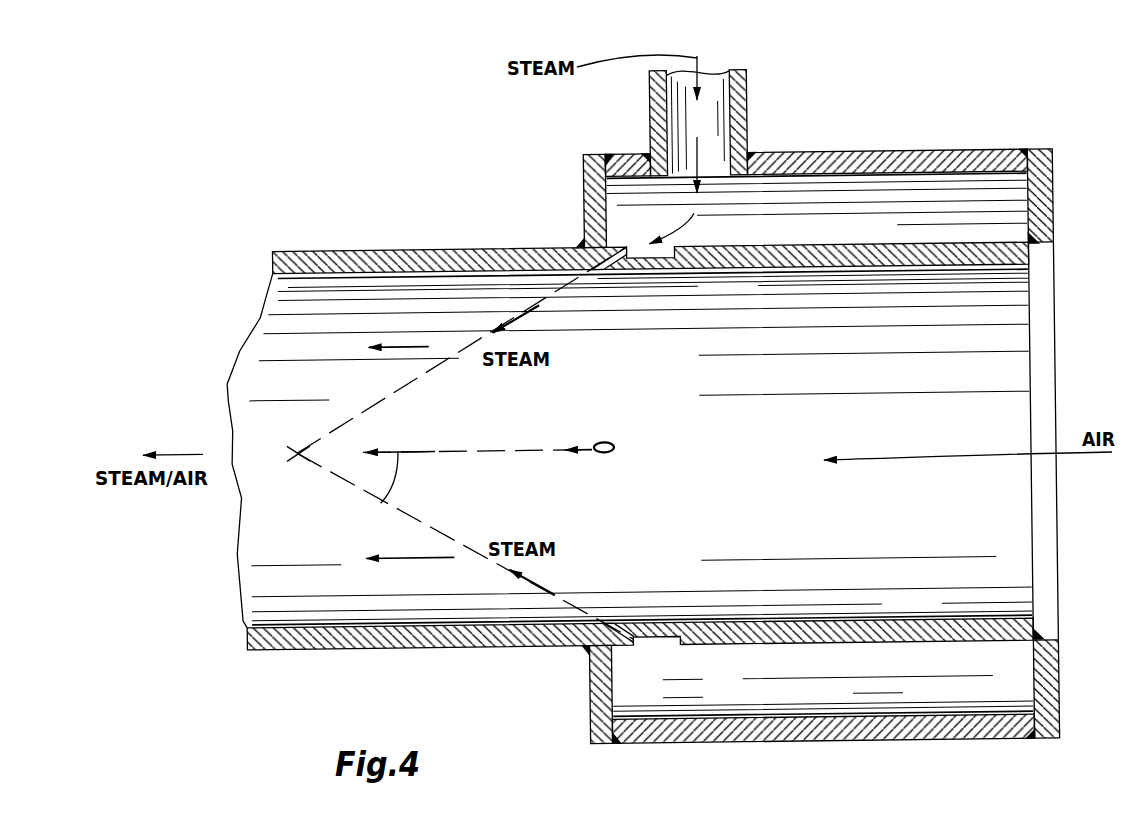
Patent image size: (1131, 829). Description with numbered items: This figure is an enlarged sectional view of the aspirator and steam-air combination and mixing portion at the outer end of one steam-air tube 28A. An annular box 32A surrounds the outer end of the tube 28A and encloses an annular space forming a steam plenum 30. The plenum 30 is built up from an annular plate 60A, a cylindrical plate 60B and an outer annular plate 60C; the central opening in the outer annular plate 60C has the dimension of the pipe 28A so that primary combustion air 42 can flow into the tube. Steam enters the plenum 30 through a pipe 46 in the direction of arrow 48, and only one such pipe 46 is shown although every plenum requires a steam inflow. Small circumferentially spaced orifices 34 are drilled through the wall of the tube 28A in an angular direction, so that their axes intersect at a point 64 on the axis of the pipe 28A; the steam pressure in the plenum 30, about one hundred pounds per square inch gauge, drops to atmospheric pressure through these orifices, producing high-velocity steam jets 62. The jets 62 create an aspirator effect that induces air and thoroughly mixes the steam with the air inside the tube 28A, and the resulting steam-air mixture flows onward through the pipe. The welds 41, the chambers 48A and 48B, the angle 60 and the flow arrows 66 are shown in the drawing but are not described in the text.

The steam-air tube 28A is at (325, 252).
The annular box 32A is at (944, 152).
The annular space / steam plenum 30 is at (1005, 207).
The orifices 34 is at (627, 272).
The weld 41 is at (582, 246).
The primary combustion air 42 is at (920, 454).
The pipe 46 is at (747, 103).
The arrow (steam inflow) 48 is at (697, 146).
The upper steam chamber 48A is at (678, 225).
The lower steam chamber 48B is at (645, 649).
The nozzle angle 60 is at (405, 558).
The annular plate 60A is at (581, 168).
The cylindrical plate 60B is at (800, 152).
The outer annular plate 60C is at (1058, 656).
The steam jets 62 is at (522, 314).
The intersection point 64 is at (297, 452).
The air flow arrow 66 is at (410, 345).